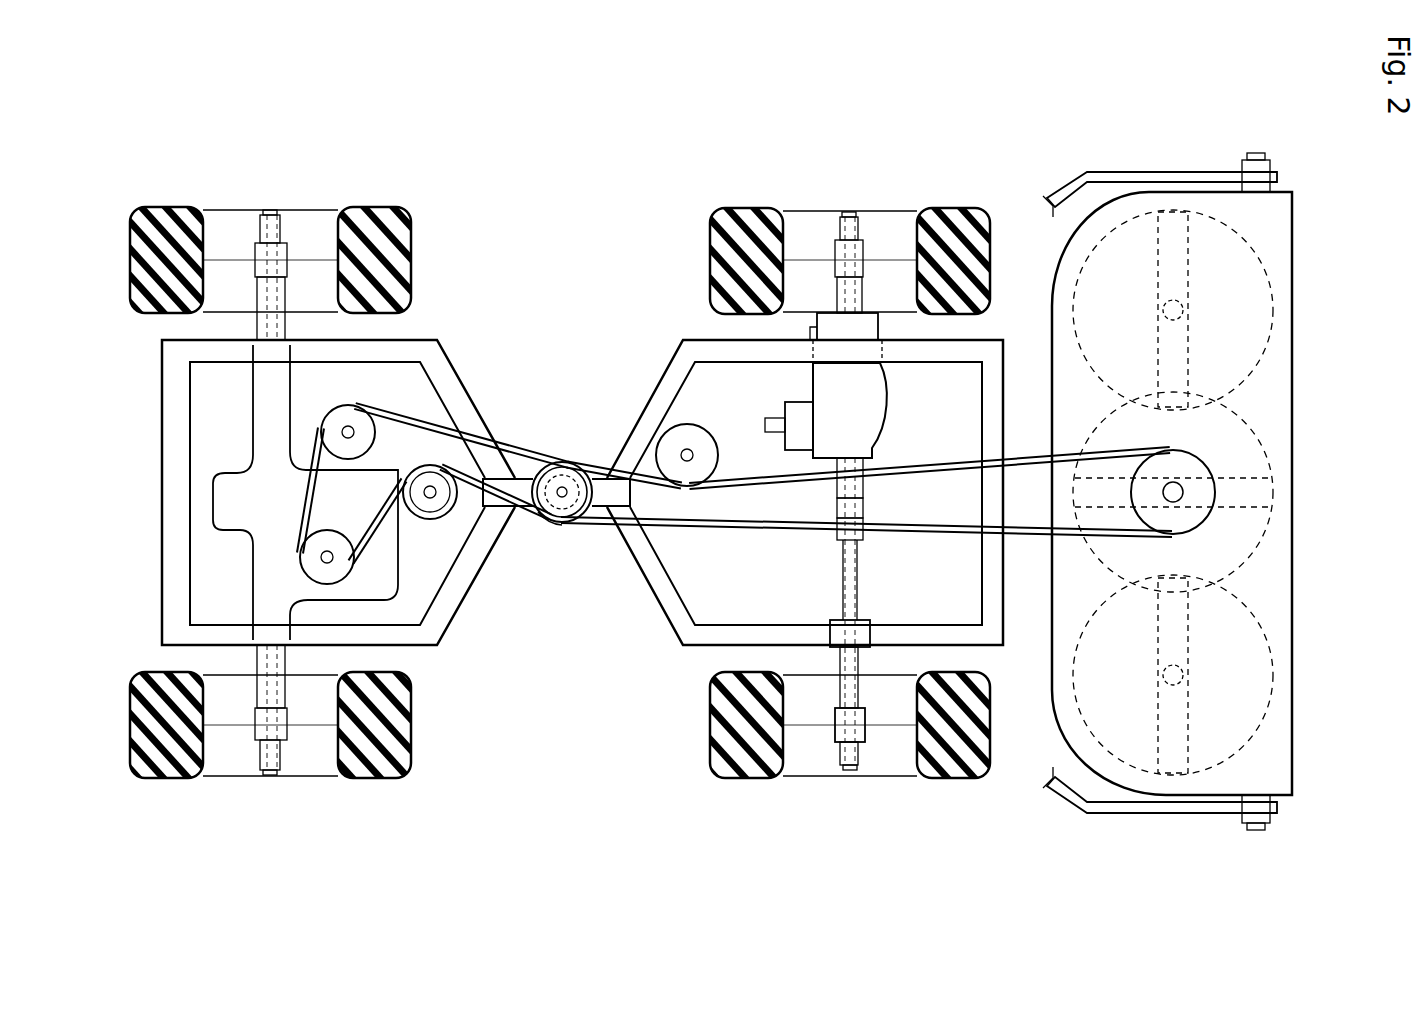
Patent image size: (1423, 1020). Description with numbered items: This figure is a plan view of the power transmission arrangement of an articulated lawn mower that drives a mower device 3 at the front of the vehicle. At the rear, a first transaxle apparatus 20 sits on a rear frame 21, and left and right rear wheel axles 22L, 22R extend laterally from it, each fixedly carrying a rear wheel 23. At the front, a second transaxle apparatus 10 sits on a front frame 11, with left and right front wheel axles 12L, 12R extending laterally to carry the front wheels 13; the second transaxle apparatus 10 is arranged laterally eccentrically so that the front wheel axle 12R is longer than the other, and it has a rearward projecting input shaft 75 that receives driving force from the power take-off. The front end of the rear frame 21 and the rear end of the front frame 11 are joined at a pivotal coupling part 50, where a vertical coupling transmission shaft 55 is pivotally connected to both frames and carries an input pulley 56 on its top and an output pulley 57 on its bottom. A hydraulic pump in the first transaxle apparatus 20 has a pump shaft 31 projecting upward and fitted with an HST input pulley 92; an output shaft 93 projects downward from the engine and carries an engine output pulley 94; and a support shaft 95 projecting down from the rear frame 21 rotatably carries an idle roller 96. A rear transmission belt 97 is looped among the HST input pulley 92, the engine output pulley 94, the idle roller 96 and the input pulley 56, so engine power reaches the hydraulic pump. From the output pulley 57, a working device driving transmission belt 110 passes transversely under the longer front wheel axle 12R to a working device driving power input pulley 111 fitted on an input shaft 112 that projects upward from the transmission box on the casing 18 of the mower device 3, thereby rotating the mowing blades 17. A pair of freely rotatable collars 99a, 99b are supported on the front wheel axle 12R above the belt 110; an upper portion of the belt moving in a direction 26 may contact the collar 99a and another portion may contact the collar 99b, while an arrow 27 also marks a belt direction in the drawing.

The mower device 3 is at (1140, 471).
The second transaxle apparatus 10 is at (885, 400).
The front frame 11 is at (683, 357).
The left front wheel axle 12L is at (849, 212).
The right front wheel axle 12R is at (850, 771).
The front wheels 13 is at (990, 258).
The mowing blades 17 is at (1185, 330).
The casing 18 is at (1052, 678).
The first transaxle apparatus 20 is at (253, 560).
The rear frame 21 is at (445, 343).
The left rear wheel axle 22L is at (272, 210).
The right rear wheel axle 22R is at (272, 775).
The rear wheels 23 is at (411, 262).
The direction 26 is at (800, 568).
The forward direction arrow 27 is at (913, 425).
The pump shaft 31 is at (327, 556).
The pivotal coupling part 50 is at (561, 500).
The coupling transmission shaft 55 is at (570, 500).
The input pulley 56 is at (560, 462).
The output pulley 57 is at (545, 512).
The input shaft 75 is at (765, 428).
The HST input pulley 92 is at (300, 563).
The output shaft 93 is at (432, 520).
The engine output pulley 94 is at (430, 467).
The support shaft 95 is at (347, 431).
The idle roller 96 is at (352, 406).
The rear transmission belt 97 is at (515, 440).
The collar 99a is at (862, 537).
The collar 99b is at (862, 488).
The working device driving transmission belt 110 is at (960, 470).
The working device driving power input pulley 111 is at (1200, 455).
The input shaft 112 is at (1178, 500).